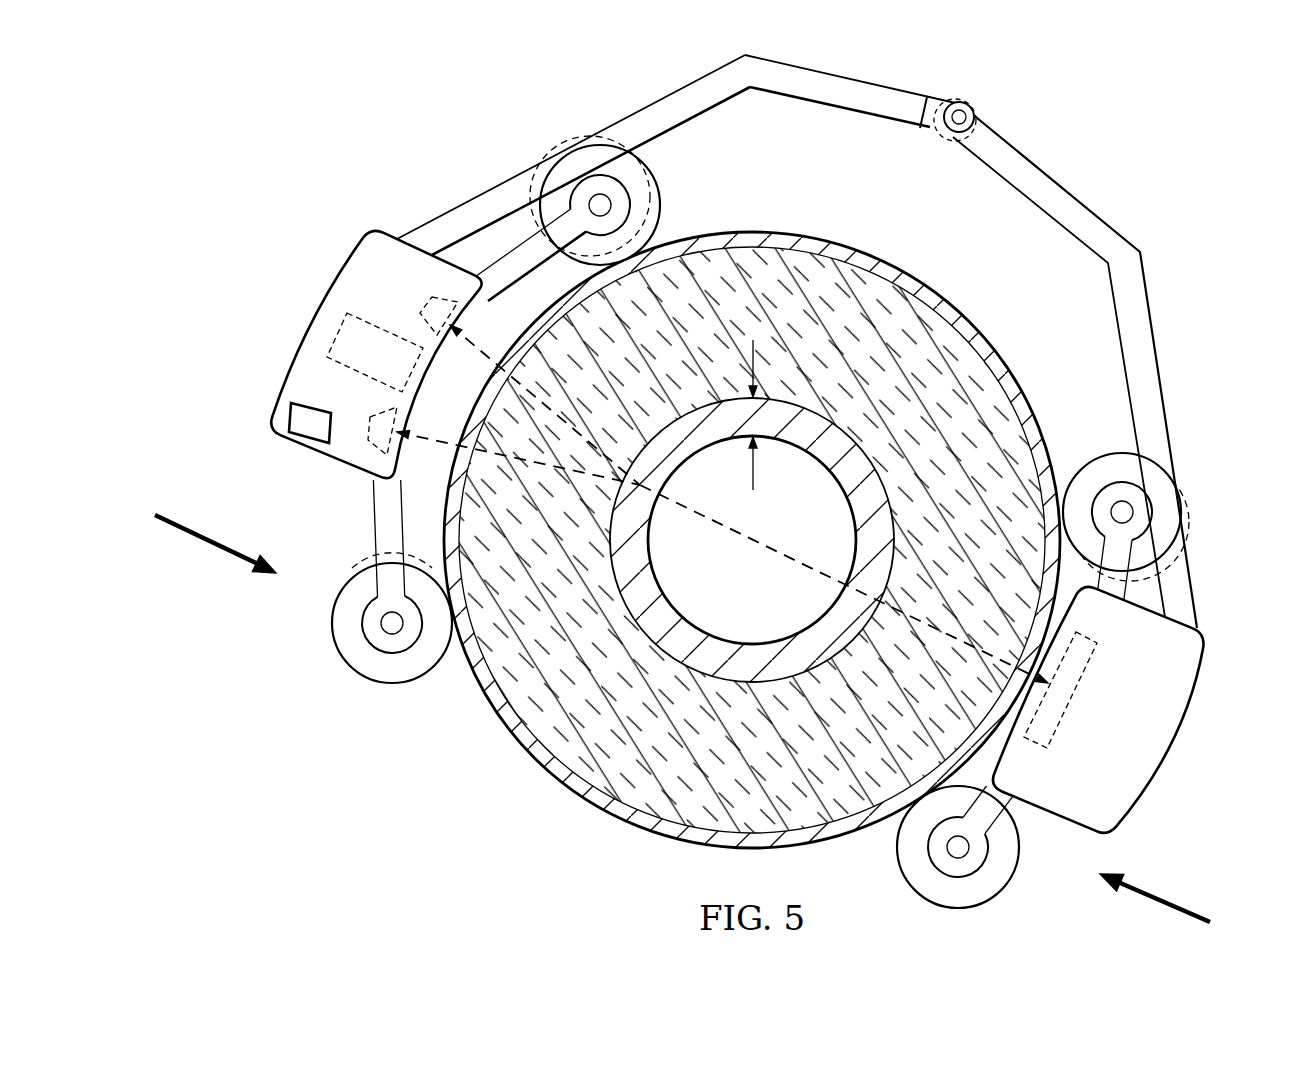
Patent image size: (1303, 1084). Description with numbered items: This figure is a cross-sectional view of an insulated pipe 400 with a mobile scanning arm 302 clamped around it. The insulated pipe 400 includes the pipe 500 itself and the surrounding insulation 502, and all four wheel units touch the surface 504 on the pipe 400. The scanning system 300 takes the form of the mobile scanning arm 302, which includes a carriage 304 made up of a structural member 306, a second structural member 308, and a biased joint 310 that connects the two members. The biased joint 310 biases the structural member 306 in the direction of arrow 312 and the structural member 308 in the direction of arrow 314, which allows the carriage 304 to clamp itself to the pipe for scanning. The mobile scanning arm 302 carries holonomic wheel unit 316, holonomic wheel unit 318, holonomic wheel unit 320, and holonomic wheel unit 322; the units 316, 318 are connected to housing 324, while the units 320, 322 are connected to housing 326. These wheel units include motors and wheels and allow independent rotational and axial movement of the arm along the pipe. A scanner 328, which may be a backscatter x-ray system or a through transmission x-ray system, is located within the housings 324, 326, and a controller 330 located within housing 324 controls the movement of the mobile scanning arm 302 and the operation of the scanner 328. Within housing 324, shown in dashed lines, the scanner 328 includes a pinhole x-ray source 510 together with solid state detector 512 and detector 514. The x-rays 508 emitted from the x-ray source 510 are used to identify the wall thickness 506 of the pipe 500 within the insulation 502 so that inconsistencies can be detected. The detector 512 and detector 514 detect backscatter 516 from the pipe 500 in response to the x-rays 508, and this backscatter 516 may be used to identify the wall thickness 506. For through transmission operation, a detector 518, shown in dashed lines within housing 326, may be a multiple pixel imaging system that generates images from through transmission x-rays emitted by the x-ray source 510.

The scanning system 300 is at (701, 501).
The mobile scanning arm 302 is at (651, 100).
The carriage 304 is at (500, 177).
The structural member 306 is at (592, 137).
The structural member 308 is at (1093, 207).
The biased joint 310 is at (985, 124).
The arrow 312 is at (205, 537).
The arrow 314 is at (1167, 903).
The holonomic wheel unit 316 is at (657, 200).
The holonomic wheel unit 318 is at (392, 684).
The holonomic wheel unit 320 is at (960, 908).
The holonomic wheel unit 322 is at (1150, 440).
The housing 324 is at (286, 362).
The housing 326 is at (1120, 710).
The scanner 328 is at (339, 325).
The controller 330 is at (292, 420).
The insulated pipe 400 is at (822, 852).
The pipe 500 is at (762, 686).
The insulation 502 is at (622, 823).
The surface 504 is at (868, 250).
The wall thickness 506 is at (758, 352).
The x-rays 508 is at (958, 638).
The x-ray source 510 is at (340, 330).
The detector 512 is at (425, 308).
The detector 514 is at (358, 458).
The backscatter 516 is at (632, 476).
The detector 518 is at (1085, 680).